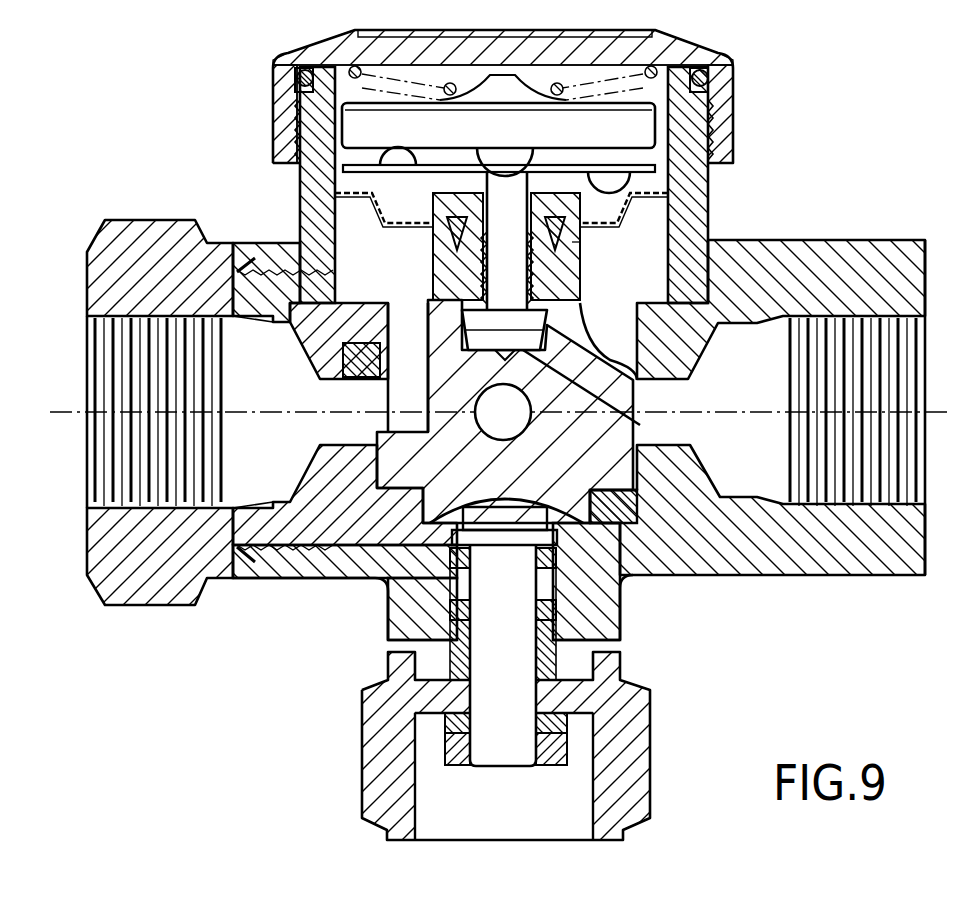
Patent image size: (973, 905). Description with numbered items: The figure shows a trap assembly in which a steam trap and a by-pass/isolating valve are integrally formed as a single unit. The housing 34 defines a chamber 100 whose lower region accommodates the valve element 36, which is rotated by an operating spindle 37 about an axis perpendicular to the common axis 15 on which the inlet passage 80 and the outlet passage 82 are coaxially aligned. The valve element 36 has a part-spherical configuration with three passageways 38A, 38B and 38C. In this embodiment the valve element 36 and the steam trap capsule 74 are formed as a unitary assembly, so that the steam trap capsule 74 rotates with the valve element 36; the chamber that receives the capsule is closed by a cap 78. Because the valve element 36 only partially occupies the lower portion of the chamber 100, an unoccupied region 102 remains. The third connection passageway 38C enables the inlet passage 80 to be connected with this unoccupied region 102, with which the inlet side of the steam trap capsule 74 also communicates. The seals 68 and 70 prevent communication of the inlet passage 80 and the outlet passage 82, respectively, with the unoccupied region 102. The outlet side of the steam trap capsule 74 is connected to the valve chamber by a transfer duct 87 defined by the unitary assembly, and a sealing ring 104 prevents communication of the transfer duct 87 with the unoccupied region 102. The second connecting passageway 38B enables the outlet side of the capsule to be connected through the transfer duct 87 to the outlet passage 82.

The axis 15 is at (100, 406).
The housing 34 is at (866, 242).
The valve element 36 is at (672, 500).
The operating spindle 37 is at (497, 665).
The first passageway 38A is at (498, 428).
The second connecting passageway 38B is at (590, 362).
The third connection passageway 38C is at (406, 328).
The seal 68 is at (325, 530).
The seal 70 is at (668, 460).
The steam trap capsule 74 is at (708, 135).
The cap 78 is at (333, 36).
The inlet passage 80 is at (112, 500).
The outlet passage 82 is at (912, 500).
The transfer duct 87 is at (517, 268).
The chamber 100 is at (367, 217).
The unoccupied region 102 is at (385, 275).
The sealing ring 104 is at (574, 244).